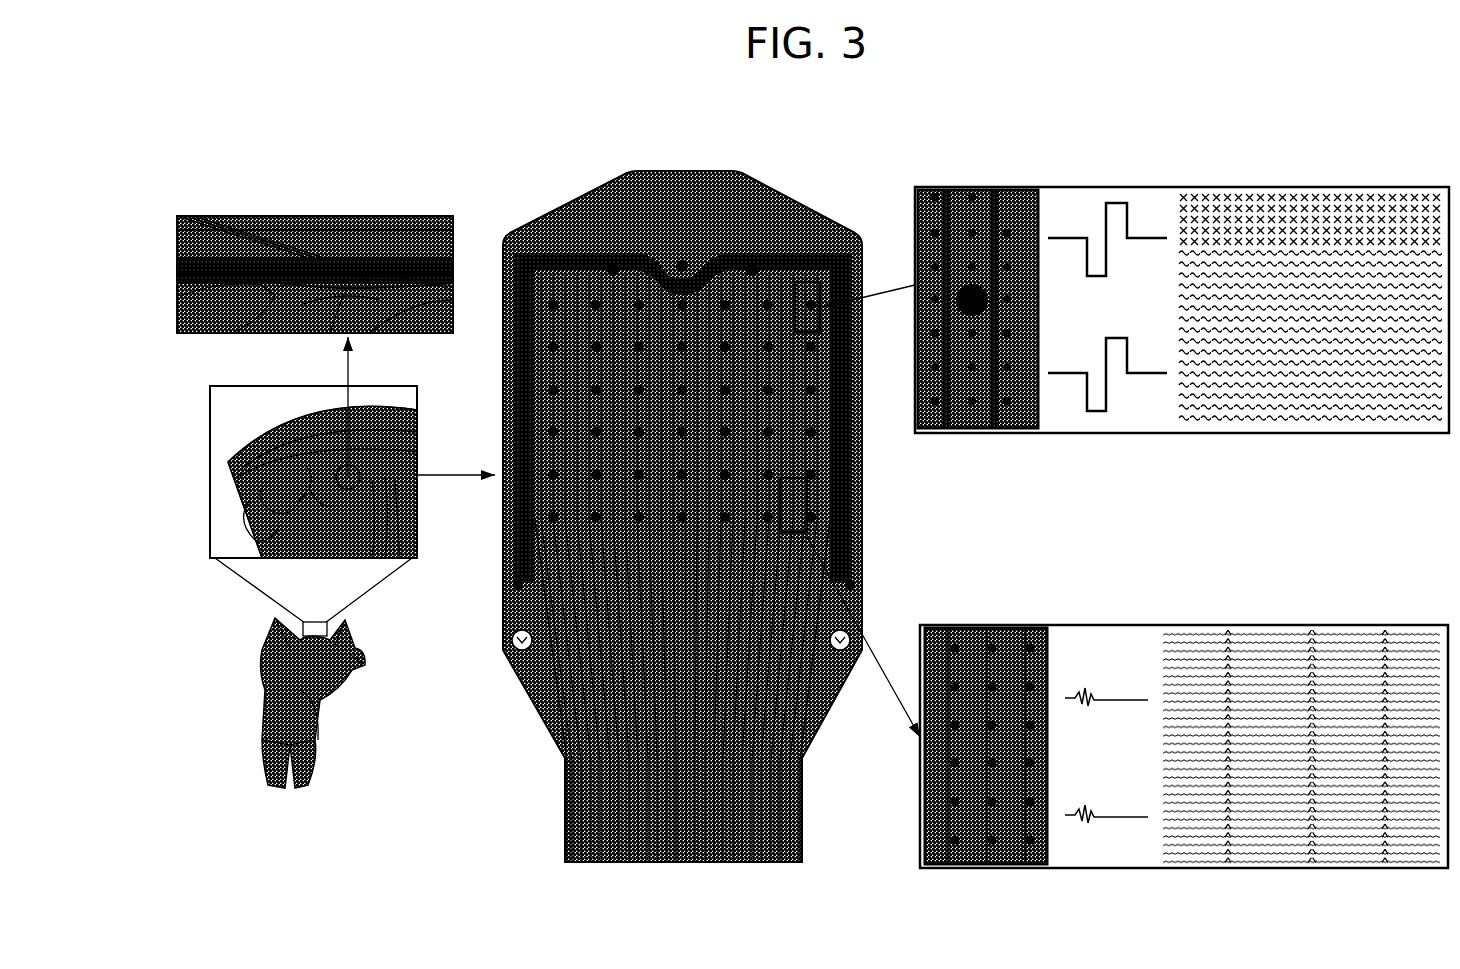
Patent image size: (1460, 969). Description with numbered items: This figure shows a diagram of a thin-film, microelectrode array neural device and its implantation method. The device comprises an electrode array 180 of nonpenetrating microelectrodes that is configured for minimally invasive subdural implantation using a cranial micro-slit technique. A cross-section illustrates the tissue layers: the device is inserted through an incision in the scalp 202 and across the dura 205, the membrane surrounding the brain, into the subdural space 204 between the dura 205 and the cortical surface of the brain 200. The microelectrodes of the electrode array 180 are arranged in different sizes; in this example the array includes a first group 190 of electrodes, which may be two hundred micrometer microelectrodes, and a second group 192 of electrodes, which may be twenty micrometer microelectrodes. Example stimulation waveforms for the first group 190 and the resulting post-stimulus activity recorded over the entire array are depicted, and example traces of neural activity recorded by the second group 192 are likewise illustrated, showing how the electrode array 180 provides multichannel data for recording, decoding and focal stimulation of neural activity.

The electrode array 180 is at (922, 160).
The first group of electrodes 190 is at (810, 245).
The second group of electrodes 192 is at (837, 503).
The brain 200 is at (200, 305).
The scalp 202 is at (358, 225).
The subdural space 204 is at (187, 278).
The dura 205 is at (190, 258).